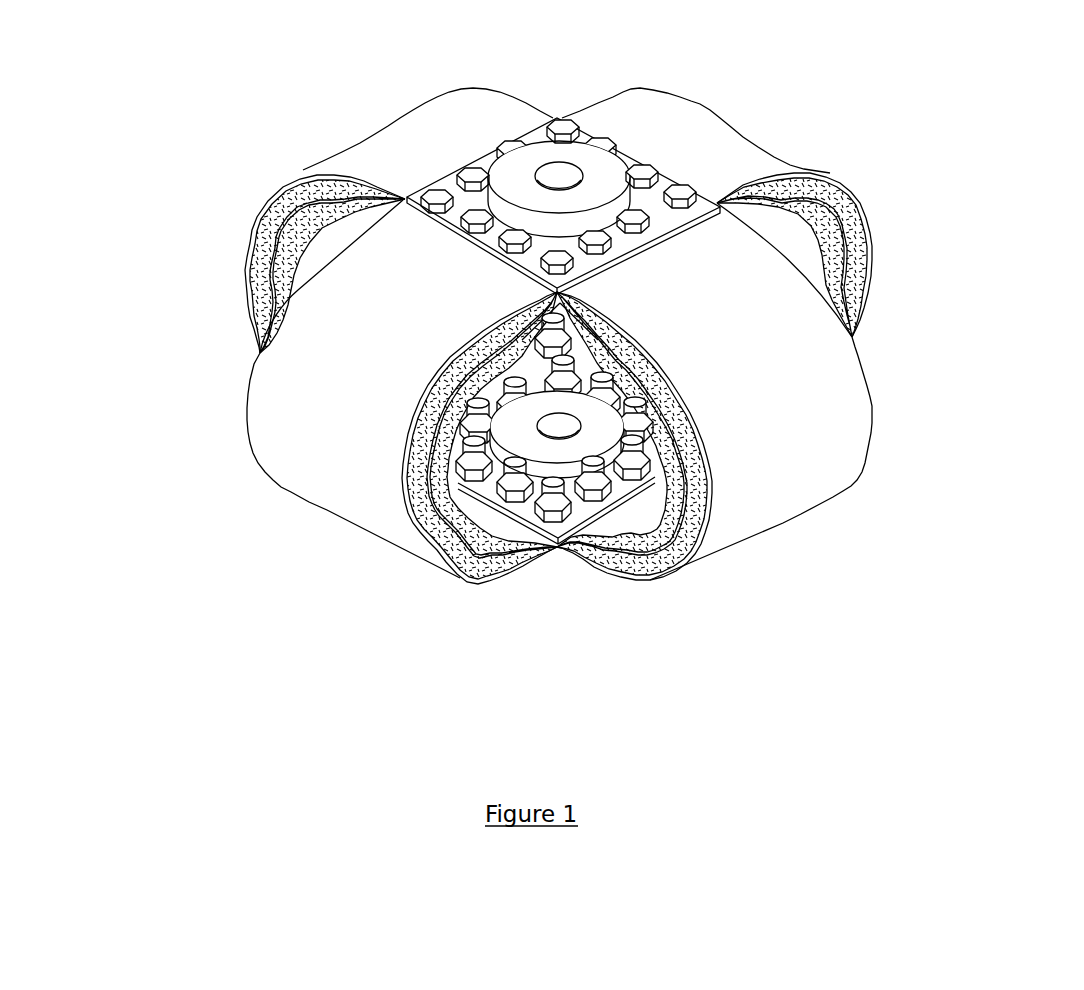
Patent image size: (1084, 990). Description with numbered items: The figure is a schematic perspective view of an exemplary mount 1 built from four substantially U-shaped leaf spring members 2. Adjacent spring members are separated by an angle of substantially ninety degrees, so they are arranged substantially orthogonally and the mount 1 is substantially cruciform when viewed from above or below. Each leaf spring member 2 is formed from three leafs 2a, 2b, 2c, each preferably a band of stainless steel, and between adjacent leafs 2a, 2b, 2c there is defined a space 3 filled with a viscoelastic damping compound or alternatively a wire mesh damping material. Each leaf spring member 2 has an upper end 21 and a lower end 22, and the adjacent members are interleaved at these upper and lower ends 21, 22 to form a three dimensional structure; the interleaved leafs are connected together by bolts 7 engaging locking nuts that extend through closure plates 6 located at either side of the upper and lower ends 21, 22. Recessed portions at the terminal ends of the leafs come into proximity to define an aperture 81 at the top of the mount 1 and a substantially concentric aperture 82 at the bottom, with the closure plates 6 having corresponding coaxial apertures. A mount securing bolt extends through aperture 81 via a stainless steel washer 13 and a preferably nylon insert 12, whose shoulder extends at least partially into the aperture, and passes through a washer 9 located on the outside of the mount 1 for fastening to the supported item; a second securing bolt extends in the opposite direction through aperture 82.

The mount 1 is at (163, 462).
The leaf spring member 2 is at (330, 160).
The leaf 2a is at (832, 173).
The leaf 2b is at (820, 225).
The leaf 2c is at (818, 245).
The space 3 is at (257, 245).
The closure plate 6 is at (618, 237).
The bolt 7 is at (418, 188).
The washer 9 is at (612, 165).
The insert 12 is at (570, 520).
The washer 13 is at (610, 493).
The upper end 21 is at (517, 152).
The lower end 22 is at (486, 494).
The aperture 81 is at (549, 172).
The aperture 82 is at (548, 427).